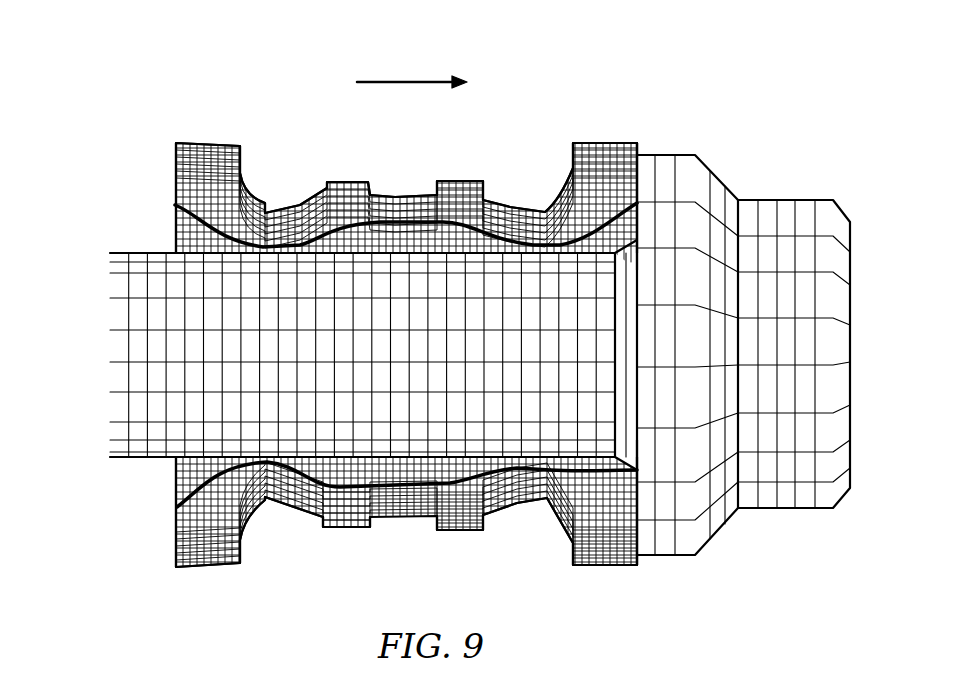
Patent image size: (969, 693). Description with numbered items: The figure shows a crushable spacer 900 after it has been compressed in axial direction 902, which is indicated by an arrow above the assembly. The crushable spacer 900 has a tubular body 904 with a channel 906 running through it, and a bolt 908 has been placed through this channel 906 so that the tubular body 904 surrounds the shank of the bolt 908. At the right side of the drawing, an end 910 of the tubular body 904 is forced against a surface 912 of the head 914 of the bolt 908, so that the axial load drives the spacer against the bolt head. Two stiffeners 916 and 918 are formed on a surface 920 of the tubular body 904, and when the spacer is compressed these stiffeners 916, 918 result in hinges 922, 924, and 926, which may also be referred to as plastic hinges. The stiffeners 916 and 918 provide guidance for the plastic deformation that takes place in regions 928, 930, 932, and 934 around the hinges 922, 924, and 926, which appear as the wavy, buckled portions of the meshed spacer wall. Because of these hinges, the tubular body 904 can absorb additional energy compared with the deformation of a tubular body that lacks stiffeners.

The crushable spacer 900 is at (600, 150).
The axial direction 902 is at (406, 80).
The tubular body 904 is at (210, 150).
The channel 906 is at (178, 228).
The bolt 908 is at (110, 430).
The end 910 is at (597, 545).
The surface 912 is at (640, 500).
The head 914 is at (806, 500).
The stiffener 916 is at (345, 180).
The stiffener 918 is at (458, 180).
The surface 920 is at (294, 508).
The hinge 922 is at (287, 225).
The hinge 924 is at (400, 213).
The hinge 926 is at (512, 222).
The region 928 is at (255, 528).
The region 930 is at (365, 530).
The region 932 is at (440, 532).
The region 934 is at (522, 503).